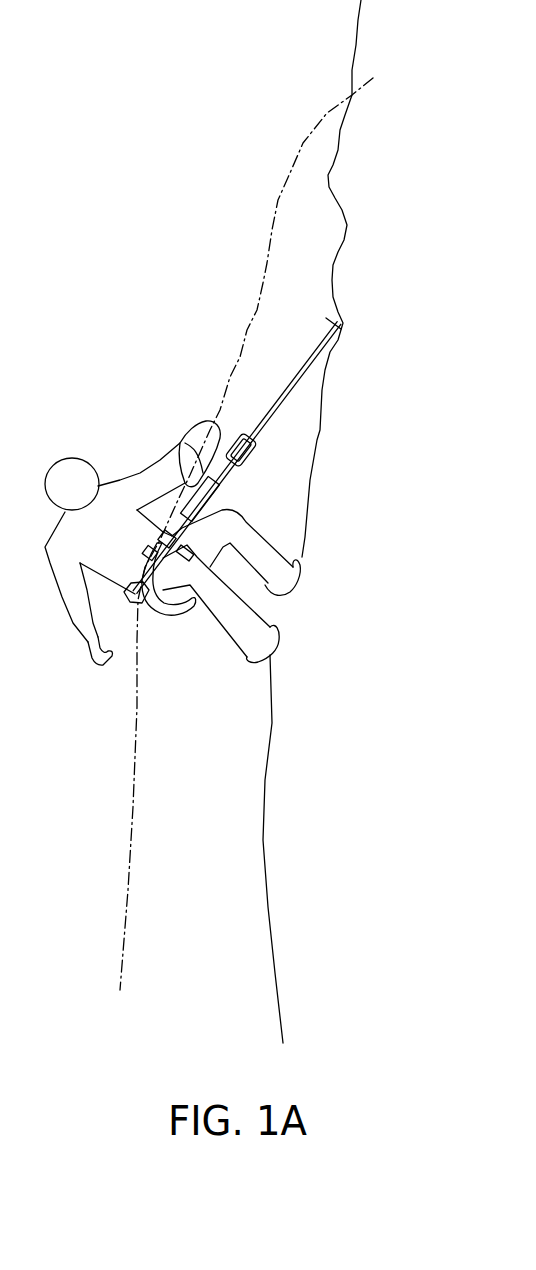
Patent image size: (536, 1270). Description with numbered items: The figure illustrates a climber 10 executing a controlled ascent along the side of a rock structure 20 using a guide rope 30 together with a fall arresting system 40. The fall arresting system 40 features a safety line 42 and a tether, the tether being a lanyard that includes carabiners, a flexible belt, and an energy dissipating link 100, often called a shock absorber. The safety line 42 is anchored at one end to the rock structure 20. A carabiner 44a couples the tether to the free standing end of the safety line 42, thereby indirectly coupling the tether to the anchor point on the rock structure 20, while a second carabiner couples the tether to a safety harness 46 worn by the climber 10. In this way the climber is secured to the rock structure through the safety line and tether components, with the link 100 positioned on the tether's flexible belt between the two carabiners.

The climber 10 is at (92, 442).
The rock structure 20 is at (352, 46).
The guide rope 30 is at (265, 275).
The fall arresting system 40 is at (263, 510).
The safety line 42 is at (303, 385).
The carabiner 44a is at (258, 453).
The safety harness 46 is at (175, 624).
The energy dissipating link 100 is at (220, 497).